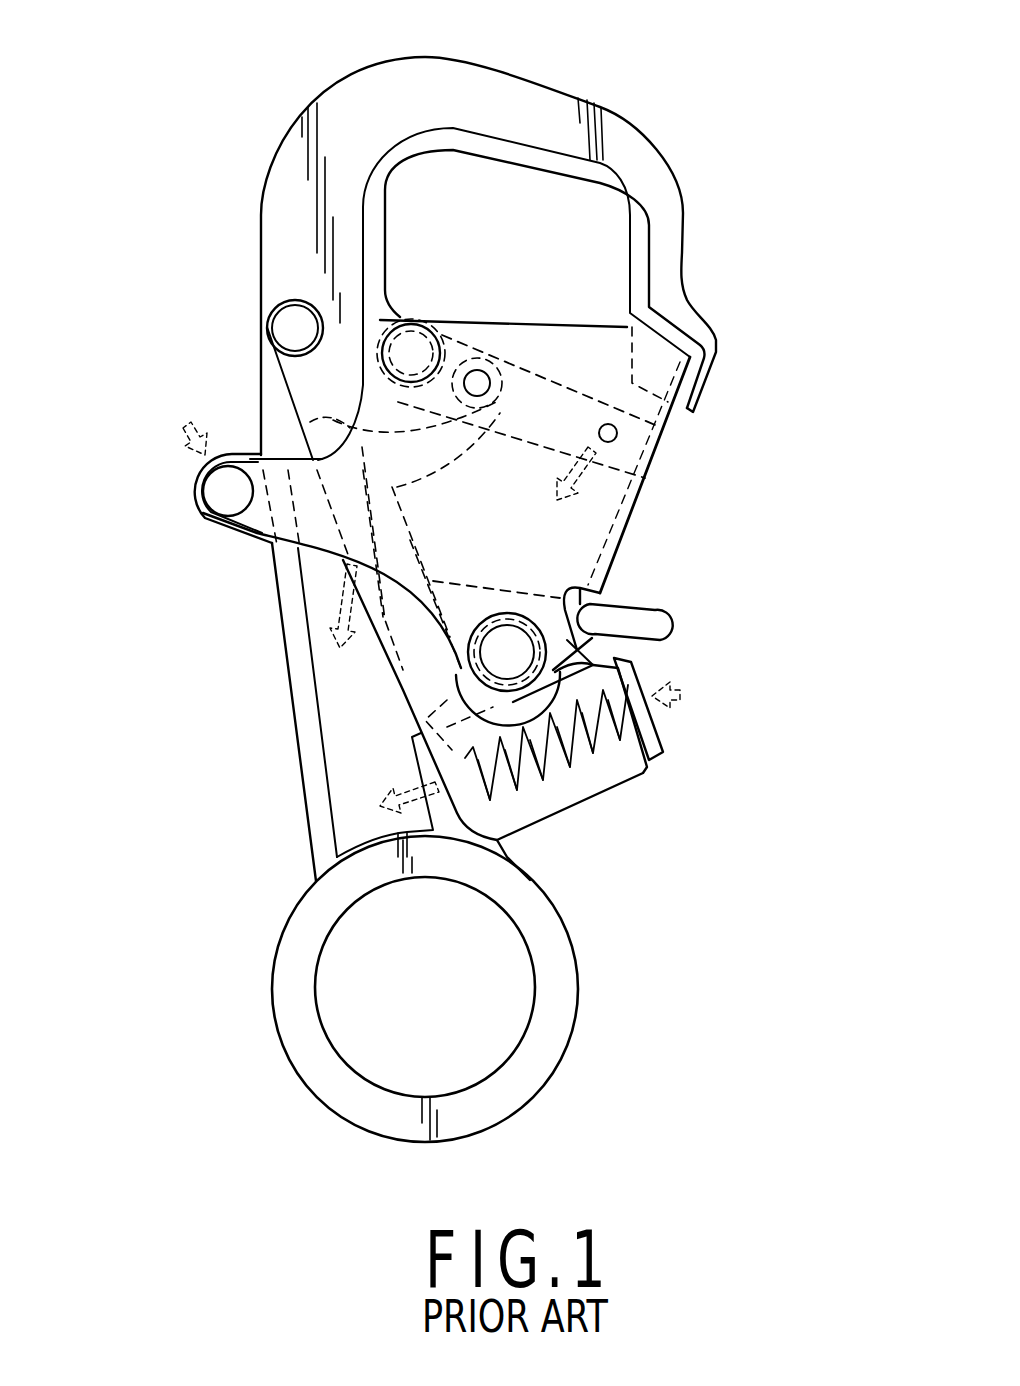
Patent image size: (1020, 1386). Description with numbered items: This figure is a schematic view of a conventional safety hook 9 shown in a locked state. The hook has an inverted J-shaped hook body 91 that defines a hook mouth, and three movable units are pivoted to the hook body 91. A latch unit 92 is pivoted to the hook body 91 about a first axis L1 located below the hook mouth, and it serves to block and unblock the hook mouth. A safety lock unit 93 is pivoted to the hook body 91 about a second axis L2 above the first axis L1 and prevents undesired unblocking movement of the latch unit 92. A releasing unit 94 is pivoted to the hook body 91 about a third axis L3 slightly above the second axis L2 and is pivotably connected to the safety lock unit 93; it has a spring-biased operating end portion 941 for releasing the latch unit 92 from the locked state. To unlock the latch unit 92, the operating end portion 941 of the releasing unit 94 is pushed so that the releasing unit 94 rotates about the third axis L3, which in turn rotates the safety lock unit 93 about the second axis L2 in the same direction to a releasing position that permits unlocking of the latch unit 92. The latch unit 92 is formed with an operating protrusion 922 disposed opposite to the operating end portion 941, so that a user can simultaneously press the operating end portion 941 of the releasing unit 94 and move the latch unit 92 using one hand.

The safety hook 9 is at (711, 76).
The hook body 91 is at (287, 678).
The operating protrusion 922 is at (196, 507).
The latch unit 92 is at (636, 512).
The safety lock unit 93 is at (536, 368).
The releasing unit 94 is at (396, 672).
The operating end portion 941 is at (588, 803).
The first axis L1 is at (505, 650).
The second axis L2 is at (413, 340).
The third axis L3 is at (293, 330).